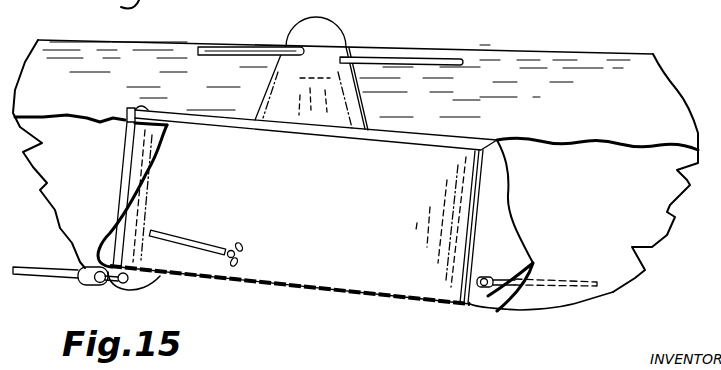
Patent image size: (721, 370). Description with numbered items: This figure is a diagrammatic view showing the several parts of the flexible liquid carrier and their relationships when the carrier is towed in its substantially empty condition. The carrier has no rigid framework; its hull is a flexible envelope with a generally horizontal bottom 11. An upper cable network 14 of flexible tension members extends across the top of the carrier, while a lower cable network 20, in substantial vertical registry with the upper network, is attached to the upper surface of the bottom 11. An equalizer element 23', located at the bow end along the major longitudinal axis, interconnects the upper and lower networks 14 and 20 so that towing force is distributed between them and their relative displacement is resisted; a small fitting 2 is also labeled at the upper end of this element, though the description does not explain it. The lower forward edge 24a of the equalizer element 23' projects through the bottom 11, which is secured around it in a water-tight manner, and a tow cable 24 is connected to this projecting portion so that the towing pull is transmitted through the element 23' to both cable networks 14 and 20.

The end cap fitting 2 is at (146, 110).
The upper cable network 14 is at (413, 64).
The lower cable network 20 is at (197, 247).
The equalizer element 23' is at (491, 226).
The bottom 11 is at (365, 295).
The tow cable 24 is at (50, 280).
The lower forward edge 24a is at (152, 283).